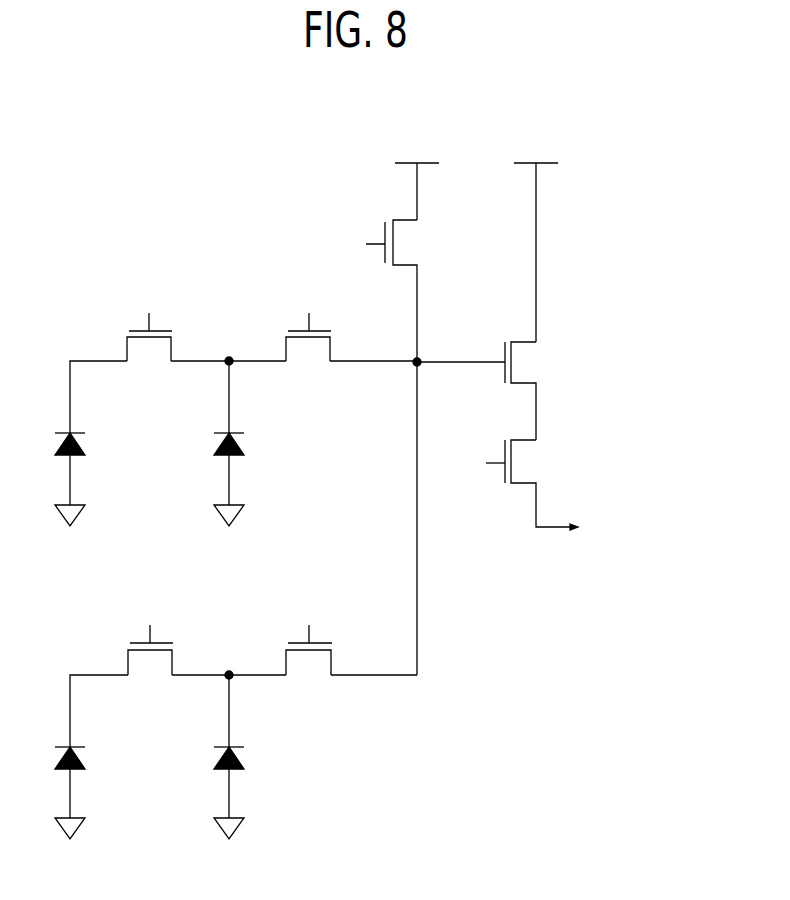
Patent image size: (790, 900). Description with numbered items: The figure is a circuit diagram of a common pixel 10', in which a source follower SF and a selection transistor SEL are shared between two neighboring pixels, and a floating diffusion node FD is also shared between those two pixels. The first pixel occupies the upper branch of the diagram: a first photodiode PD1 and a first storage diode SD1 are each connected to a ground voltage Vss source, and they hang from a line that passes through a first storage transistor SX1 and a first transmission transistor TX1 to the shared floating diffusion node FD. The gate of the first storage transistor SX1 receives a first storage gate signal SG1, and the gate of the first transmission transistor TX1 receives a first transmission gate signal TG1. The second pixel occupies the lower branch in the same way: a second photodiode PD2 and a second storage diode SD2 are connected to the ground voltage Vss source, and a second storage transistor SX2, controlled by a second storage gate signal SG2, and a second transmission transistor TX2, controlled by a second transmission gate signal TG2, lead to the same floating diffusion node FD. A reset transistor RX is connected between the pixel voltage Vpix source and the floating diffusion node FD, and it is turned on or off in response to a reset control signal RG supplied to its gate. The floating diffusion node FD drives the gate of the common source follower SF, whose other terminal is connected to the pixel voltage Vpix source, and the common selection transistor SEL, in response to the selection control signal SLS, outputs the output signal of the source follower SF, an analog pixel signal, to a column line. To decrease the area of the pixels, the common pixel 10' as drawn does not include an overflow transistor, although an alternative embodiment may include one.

The common pixel 10' is at (378, 471).
The first photodiode PD1 is at (46, 467).
The second photodiode PD2 is at (46, 781).
The first storage diode SD1 is at (206, 467).
The second storage diode SD2 is at (206, 781).
The first storage transistor SX1 is at (149, 358).
The second storage transistor SX2 is at (150, 671).
The first transmission transistor TX1 is at (308, 358).
The second transmission transistor TX2 is at (308, 671).
The first storage gate signal SG1 is at (150, 307).
The second storage gate signal SG2 is at (151, 620).
The first transmission gate signal TG1 is at (309, 307).
The second transmission gate signal TG2 is at (310, 620).
The reset transistor RX is at (411, 291).
The reset control signal RG is at (358, 242).
The floating diffusion node FD is at (459, 503).
The source follower SF is at (526, 391).
The selection transistor SEL is at (541, 485).
The selection control signal SLS is at (474, 463).
The pixel voltage Vpix is at (476, 235).
The ground voltage Vss is at (150, 686).